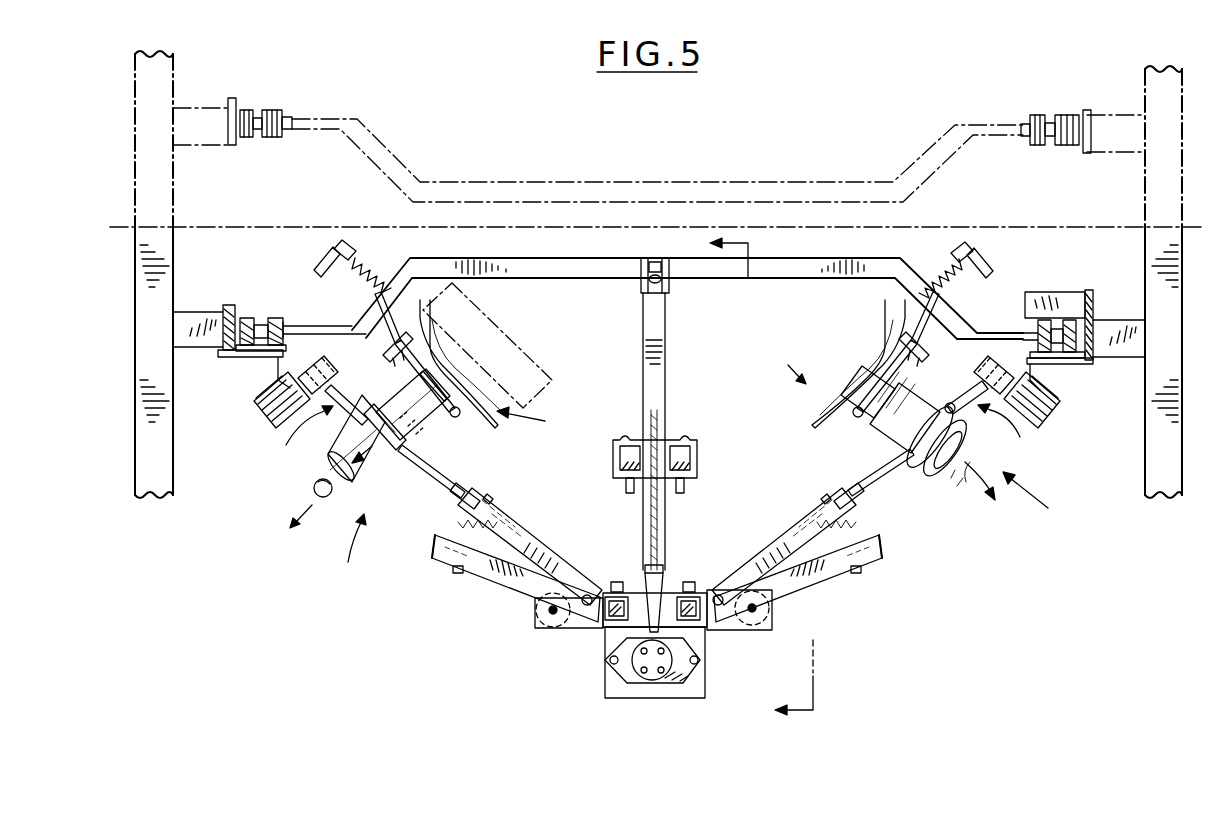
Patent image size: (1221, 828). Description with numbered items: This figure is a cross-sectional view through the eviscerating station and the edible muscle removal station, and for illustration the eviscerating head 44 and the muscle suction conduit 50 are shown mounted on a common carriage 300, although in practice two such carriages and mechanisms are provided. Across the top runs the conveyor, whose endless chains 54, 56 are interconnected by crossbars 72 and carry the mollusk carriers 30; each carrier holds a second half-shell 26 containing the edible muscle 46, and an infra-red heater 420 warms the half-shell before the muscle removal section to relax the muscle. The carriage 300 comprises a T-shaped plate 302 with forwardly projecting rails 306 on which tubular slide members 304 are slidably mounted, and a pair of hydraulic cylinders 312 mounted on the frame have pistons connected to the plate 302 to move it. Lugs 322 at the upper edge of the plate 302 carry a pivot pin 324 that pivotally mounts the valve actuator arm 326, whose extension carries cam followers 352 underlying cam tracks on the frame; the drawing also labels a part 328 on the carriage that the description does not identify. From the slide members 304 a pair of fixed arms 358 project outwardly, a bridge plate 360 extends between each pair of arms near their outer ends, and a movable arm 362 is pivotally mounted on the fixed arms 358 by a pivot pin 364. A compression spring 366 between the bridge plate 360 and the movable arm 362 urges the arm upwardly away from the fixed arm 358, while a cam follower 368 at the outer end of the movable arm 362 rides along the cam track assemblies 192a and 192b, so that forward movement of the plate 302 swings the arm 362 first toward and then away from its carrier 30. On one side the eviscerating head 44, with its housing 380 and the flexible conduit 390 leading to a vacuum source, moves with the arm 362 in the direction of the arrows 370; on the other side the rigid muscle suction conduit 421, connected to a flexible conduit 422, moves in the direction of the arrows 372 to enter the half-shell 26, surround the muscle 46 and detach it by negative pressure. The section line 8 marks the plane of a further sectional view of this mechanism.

The section line 8- 8 is at (776, 477).
The second half-shell 26 is at (456, 408).
The mollusk carrier 30 is at (651, 397).
The eviscerating head 44 is at (1021, 495).
The edible muscle 46 is at (327, 498).
The muscle suction conduit 50 is at (344, 552).
The endless chain 54 is at (255, 318).
The endless chain 56 is at (1055, 322).
The crossbar 72 is at (583, 274).
The cam track assembly 192a is at (1064, 393).
The cam track assembly 192b is at (258, 387).
The carriage 300 is at (648, 606).
The T-shaped plate 302 is at (690, 688).
The tubular slide member 304 is at (590, 628).
The rail 306 is at (612, 618).
The hydraulic cylinder 312 is at (536, 625).
The lug 322 is at (648, 560).
The pivot pin 324 is at (672, 524).
The valve actuator arm 326 is at (650, 595).
The flanged plate 328 is at (645, 688).
The cam follower 352 is at (640, 490).
The fixed arm 358 is at (500, 582).
The bridge plate 360 is at (440, 552).
The movable arm 362 is at (530, 535).
The pivot pin 364 is at (586, 595).
The compression spring 366 is at (462, 522).
The cam follower 368 is at (330, 370).
The arrows 370 is at (1022, 437).
The arrows 372 is at (290, 437).
The housing 380 is at (878, 393).
The flexible conduit 390 is at (932, 468).
The infra-red heater 420 is at (525, 350).
The muscle suction conduit 421 is at (390, 397).
The flexible conduit 422 is at (335, 468).